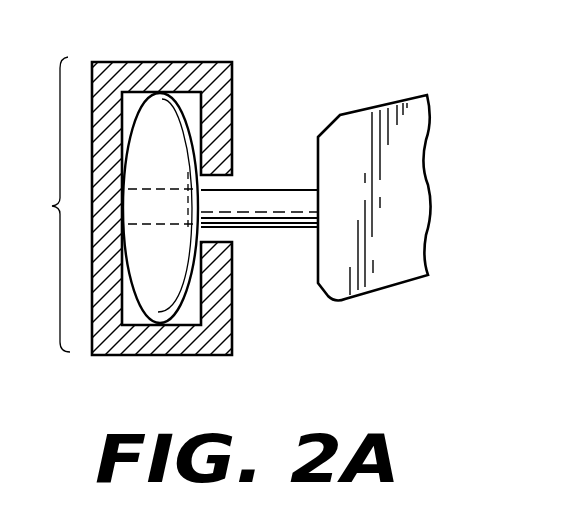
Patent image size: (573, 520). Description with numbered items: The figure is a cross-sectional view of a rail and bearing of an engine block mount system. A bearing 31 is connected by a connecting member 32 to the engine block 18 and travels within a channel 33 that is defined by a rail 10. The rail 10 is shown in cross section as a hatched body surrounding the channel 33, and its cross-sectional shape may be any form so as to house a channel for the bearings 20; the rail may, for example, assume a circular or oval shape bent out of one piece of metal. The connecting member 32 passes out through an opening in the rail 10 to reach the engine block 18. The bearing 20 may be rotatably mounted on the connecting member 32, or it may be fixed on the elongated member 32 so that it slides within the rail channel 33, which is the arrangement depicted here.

The rail 10 is at (108, 68).
The bearing 20 is at (43, 204).
The bearing 31 is at (163, 150).
The connecting member 32 is at (243, 203).
The channel 33 is at (130, 312).
The engine block 18 is at (398, 162).